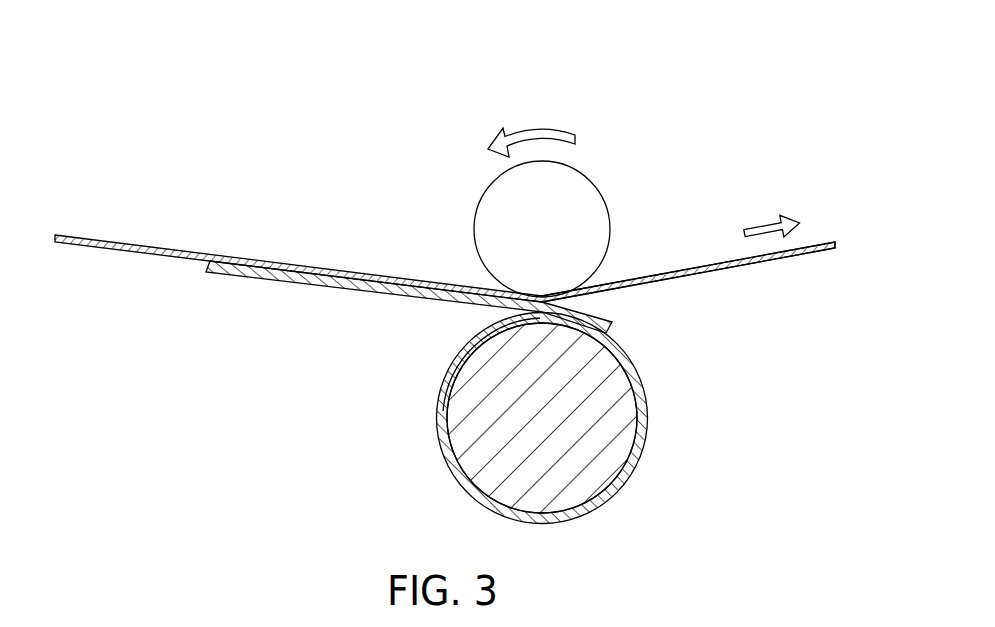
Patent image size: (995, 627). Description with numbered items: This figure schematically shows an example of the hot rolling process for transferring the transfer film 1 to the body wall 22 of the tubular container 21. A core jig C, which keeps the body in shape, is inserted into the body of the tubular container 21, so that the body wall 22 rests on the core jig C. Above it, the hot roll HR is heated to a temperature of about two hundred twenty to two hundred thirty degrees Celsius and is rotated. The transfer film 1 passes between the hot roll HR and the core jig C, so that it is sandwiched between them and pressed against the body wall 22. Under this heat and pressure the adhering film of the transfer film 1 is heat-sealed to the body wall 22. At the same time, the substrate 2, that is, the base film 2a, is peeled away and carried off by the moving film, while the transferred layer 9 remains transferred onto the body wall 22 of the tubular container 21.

The transfer film 1 is at (282, 248).
The substrate 2 is at (688, 225).
The base film 2a is at (703, 268).
The transferred layer 9 is at (375, 295).
The tubular container 21 is at (613, 418).
The body wall 22 is at (640, 383).
The core jig C is at (607, 430).
The hot roll HR is at (550, 183).